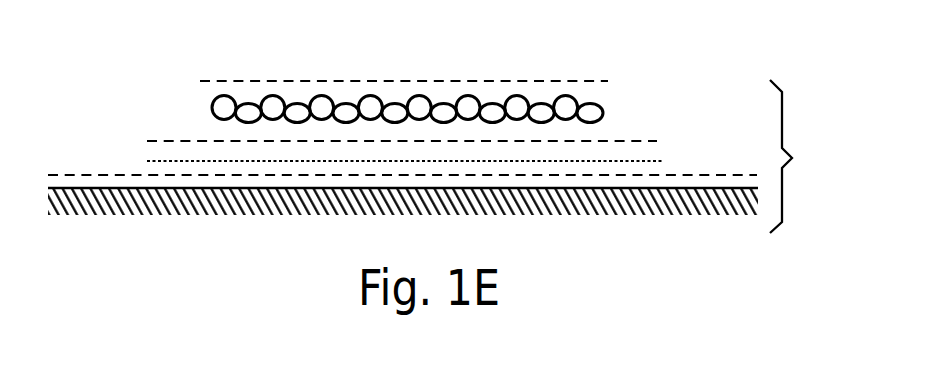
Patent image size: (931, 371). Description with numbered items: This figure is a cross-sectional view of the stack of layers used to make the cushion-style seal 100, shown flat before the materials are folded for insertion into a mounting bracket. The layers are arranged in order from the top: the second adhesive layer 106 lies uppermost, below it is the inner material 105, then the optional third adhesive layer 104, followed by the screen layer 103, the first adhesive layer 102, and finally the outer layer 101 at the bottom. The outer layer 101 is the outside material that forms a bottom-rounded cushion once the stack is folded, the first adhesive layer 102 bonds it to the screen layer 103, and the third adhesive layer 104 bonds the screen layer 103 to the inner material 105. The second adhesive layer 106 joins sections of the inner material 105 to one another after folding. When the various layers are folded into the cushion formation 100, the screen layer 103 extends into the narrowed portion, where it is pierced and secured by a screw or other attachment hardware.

The cushion-style seal 100 is at (797, 156).
The outer layer 101 is at (170, 203).
The first adhesive layer 102 is at (101, 173).
The screen layer 103 is at (655, 162).
The third adhesive layer 104 is at (169, 141).
The inner material 105 is at (603, 108).
The second adhesive layer 106 is at (520, 82).